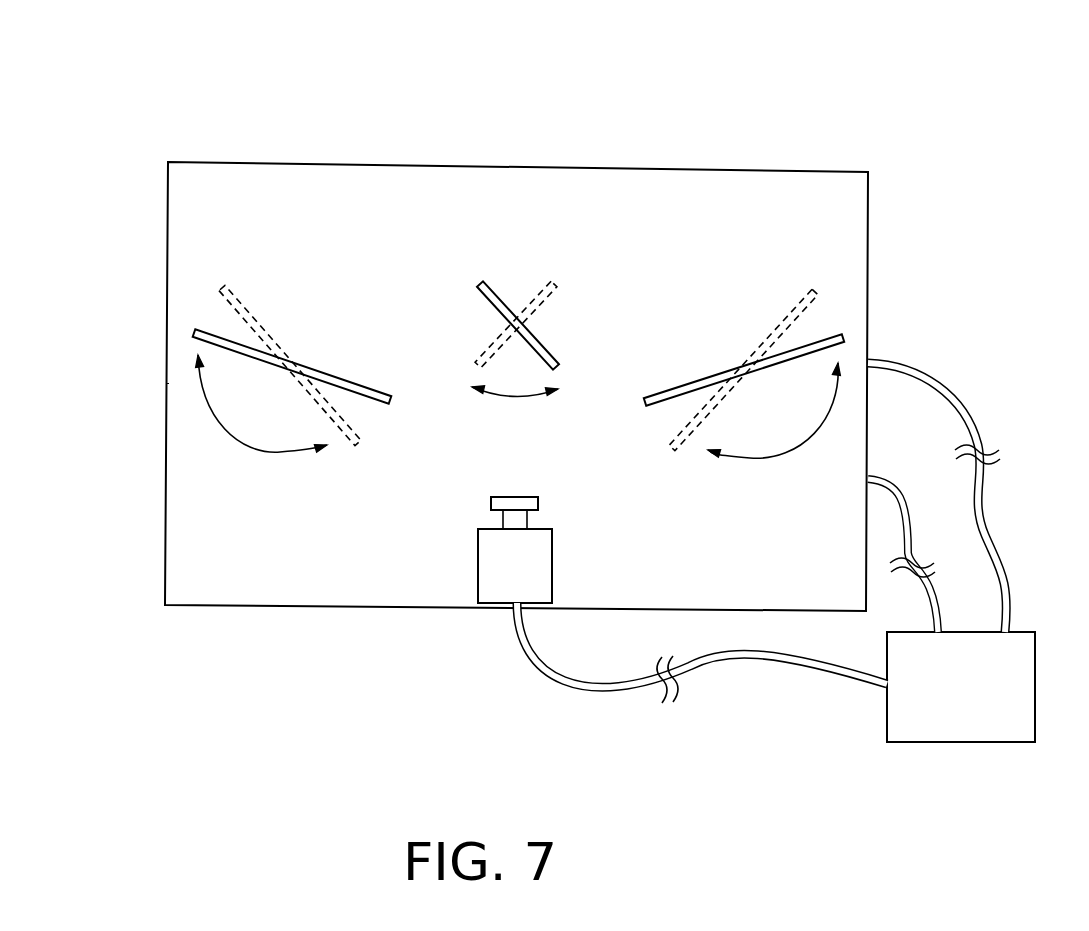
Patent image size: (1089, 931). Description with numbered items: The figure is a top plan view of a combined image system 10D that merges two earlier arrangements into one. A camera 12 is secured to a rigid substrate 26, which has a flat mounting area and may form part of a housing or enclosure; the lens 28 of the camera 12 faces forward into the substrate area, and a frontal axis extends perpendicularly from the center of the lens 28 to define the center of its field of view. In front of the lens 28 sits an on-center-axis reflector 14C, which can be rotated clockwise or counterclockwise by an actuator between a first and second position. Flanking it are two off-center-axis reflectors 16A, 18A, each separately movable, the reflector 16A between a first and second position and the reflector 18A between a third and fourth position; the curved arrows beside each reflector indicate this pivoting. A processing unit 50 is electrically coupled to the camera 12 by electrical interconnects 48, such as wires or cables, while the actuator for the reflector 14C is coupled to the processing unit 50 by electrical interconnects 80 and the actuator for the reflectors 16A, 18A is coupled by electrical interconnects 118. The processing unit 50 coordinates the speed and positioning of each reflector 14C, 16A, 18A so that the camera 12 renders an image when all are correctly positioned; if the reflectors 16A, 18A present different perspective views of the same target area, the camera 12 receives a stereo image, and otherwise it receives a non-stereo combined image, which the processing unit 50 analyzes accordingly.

The combined image system 10D is at (842, 125).
The substrate 26 is at (250, 590).
The off-center-axis reflector 16A is at (310, 327).
The on-center-axis reflector 14C is at (519, 293).
The off-center-axis reflector 18A is at (730, 337).
The camera 12 is at (531, 582).
The lens 28 is at (512, 494).
The processing unit 50 is at (979, 703).
The electrical interconnects 48 is at (612, 693).
The electrical interconnects 118 is at (963, 395).
The electrical interconnects 80 is at (888, 475).